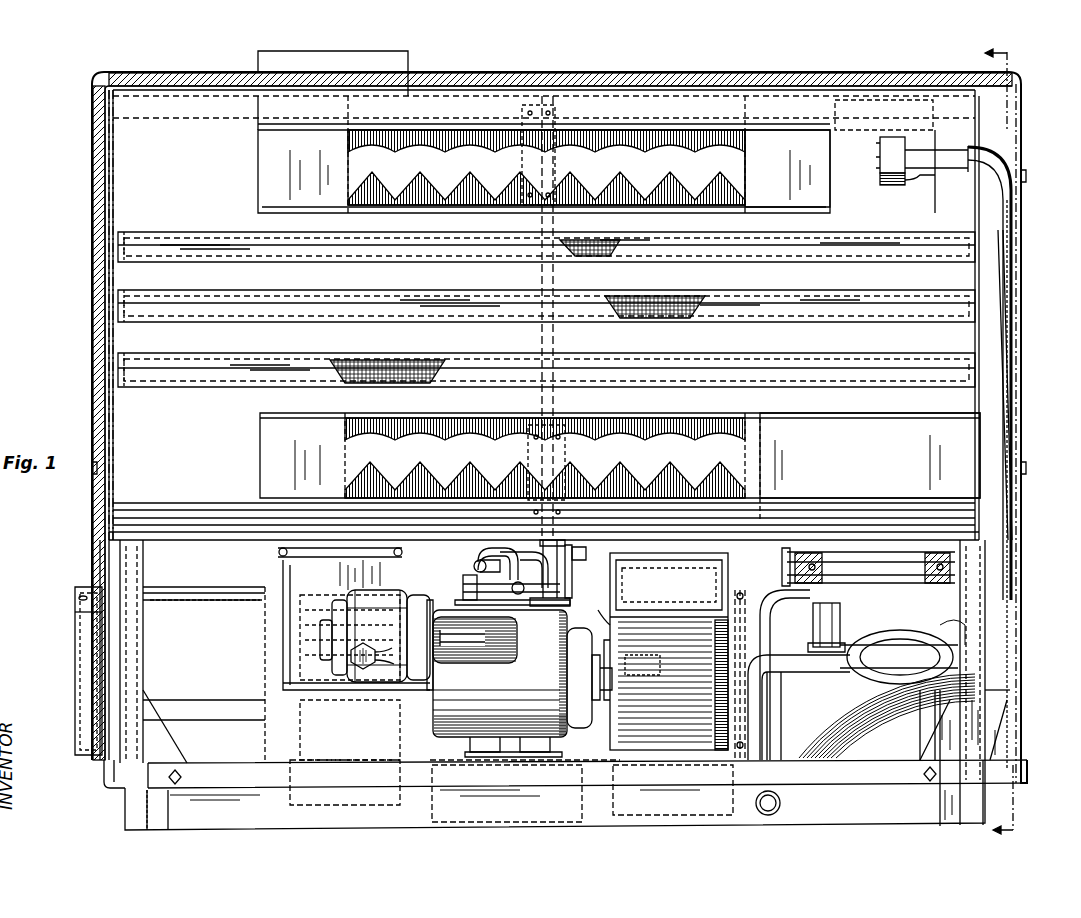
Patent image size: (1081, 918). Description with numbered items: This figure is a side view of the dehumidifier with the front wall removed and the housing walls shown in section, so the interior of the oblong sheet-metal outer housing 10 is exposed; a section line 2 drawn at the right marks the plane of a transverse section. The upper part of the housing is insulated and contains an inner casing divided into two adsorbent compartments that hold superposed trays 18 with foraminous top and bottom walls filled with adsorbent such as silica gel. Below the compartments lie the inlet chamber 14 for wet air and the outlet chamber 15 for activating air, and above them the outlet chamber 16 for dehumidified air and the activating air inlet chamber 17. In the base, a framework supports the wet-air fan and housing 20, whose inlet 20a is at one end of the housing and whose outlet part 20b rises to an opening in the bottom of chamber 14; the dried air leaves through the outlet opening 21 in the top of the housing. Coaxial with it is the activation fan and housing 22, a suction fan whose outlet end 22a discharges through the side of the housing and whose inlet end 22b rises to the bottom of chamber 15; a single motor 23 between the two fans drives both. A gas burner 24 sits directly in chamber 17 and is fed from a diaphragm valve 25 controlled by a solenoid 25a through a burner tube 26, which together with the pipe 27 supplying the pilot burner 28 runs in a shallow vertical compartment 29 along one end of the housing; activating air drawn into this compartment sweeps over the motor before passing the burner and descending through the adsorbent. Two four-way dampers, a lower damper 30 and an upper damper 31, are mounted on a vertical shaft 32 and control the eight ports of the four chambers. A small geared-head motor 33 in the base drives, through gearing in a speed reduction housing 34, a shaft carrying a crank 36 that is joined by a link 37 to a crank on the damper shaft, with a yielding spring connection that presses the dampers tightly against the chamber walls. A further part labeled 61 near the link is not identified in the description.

The section line 2- 2 is at (1008, 445).
The outer housing 10 is at (95, 190).
The inlet chamber 14 is at (262, 434).
The outlet chamber 15 is at (818, 424).
The outlet chamber 16 is at (266, 180).
The activating air inlet chamber 17 is at (758, 170).
The trays 18 is at (242, 318).
The fan and housing 20 is at (372, 760).
The inlet 20a is at (78, 597).
The outlet part 20b is at (287, 578).
The outlet opening 21 is at (400, 60).
The activation fan and housing 22 is at (626, 722).
The outlet end 22a is at (600, 622).
The inlet end 22b is at (800, 584).
The motor 23 is at (578, 606).
The heater 24 is at (880, 158).
The valve 25 is at (914, 635).
The solenoid 25a is at (842, 618).
The burner tube 26 is at (1005, 333).
The pipe 27 is at (1012, 430).
The pilot burner 28 is at (908, 192).
The shallow vertical compartment 29 is at (1016, 262).
The lower four-way damper 30 is at (636, 412).
The upper four-way damper 31 is at (730, 172).
The vertical shaft 32 is at (540, 400).
The geared-head motor 33 is at (392, 606).
The speed reduction housing 34 is at (512, 640).
The crank 36 is at (478, 566).
The link 37 is at (500, 560).
The coupling 61 is at (478, 584).